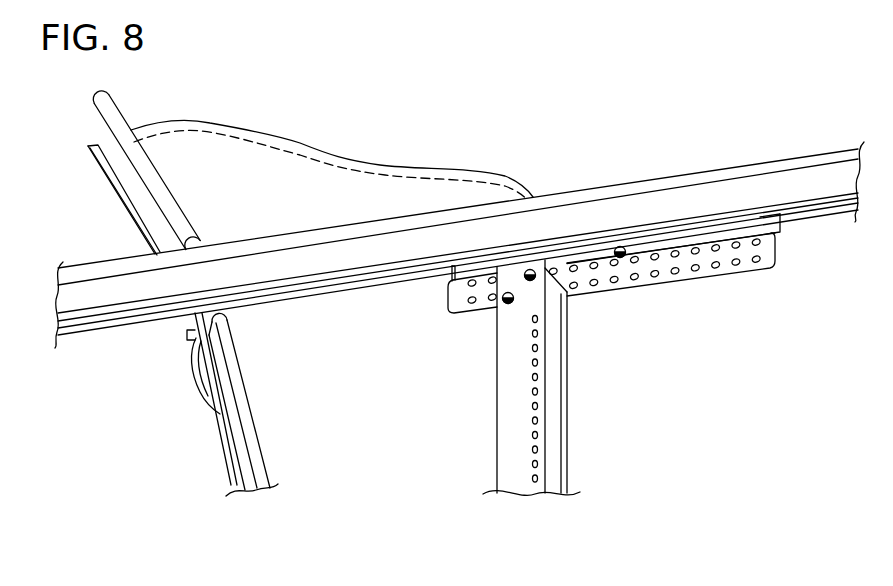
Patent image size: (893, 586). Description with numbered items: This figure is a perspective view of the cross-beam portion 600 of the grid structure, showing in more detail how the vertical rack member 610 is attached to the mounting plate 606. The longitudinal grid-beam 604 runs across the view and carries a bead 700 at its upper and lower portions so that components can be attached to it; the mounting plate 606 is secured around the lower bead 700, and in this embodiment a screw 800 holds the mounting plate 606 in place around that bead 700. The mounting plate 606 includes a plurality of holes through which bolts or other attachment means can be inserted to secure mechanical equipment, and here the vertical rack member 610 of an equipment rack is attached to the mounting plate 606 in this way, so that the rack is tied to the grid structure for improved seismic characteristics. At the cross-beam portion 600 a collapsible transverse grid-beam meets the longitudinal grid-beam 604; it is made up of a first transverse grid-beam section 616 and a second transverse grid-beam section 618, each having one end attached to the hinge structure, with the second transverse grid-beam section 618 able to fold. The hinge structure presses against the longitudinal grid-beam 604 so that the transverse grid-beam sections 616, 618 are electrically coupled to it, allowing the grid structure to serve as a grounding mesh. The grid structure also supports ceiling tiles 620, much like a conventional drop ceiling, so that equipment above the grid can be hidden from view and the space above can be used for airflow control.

The cross-beam portion 600 is at (140, 362).
The longitudinal grid-beam 604 is at (697, 173).
The mounting plate 606 is at (750, 265).
The vertical rack member 610 is at (567, 410).
The first transverse grid-beam section 616 is at (98, 140).
The second transverse grid-beam section 618 is at (252, 430).
The ceiling tile 620 is at (283, 160).
The bead 700 is at (810, 219).
The screw 800 is at (623, 257).